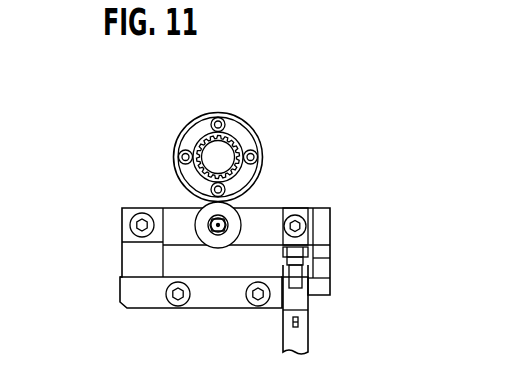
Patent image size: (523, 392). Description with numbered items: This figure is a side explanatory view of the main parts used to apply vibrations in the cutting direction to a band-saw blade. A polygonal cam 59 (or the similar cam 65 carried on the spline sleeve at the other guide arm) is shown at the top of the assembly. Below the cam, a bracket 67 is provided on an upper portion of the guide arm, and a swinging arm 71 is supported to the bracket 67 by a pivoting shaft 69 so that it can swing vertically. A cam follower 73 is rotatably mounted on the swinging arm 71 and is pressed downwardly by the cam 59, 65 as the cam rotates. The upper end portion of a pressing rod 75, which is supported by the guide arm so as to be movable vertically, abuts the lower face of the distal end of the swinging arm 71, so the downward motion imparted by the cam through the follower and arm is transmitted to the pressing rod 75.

The cam 59 is at (240, 129).
The cam 65 is at (265, 140).
The bracket 67 is at (128, 265).
The pivoting shaft 69 is at (138, 218).
The swinging arm 71 is at (268, 214).
The cam follower 73 is at (190, 207).
The pressing rod 75 is at (308, 333).